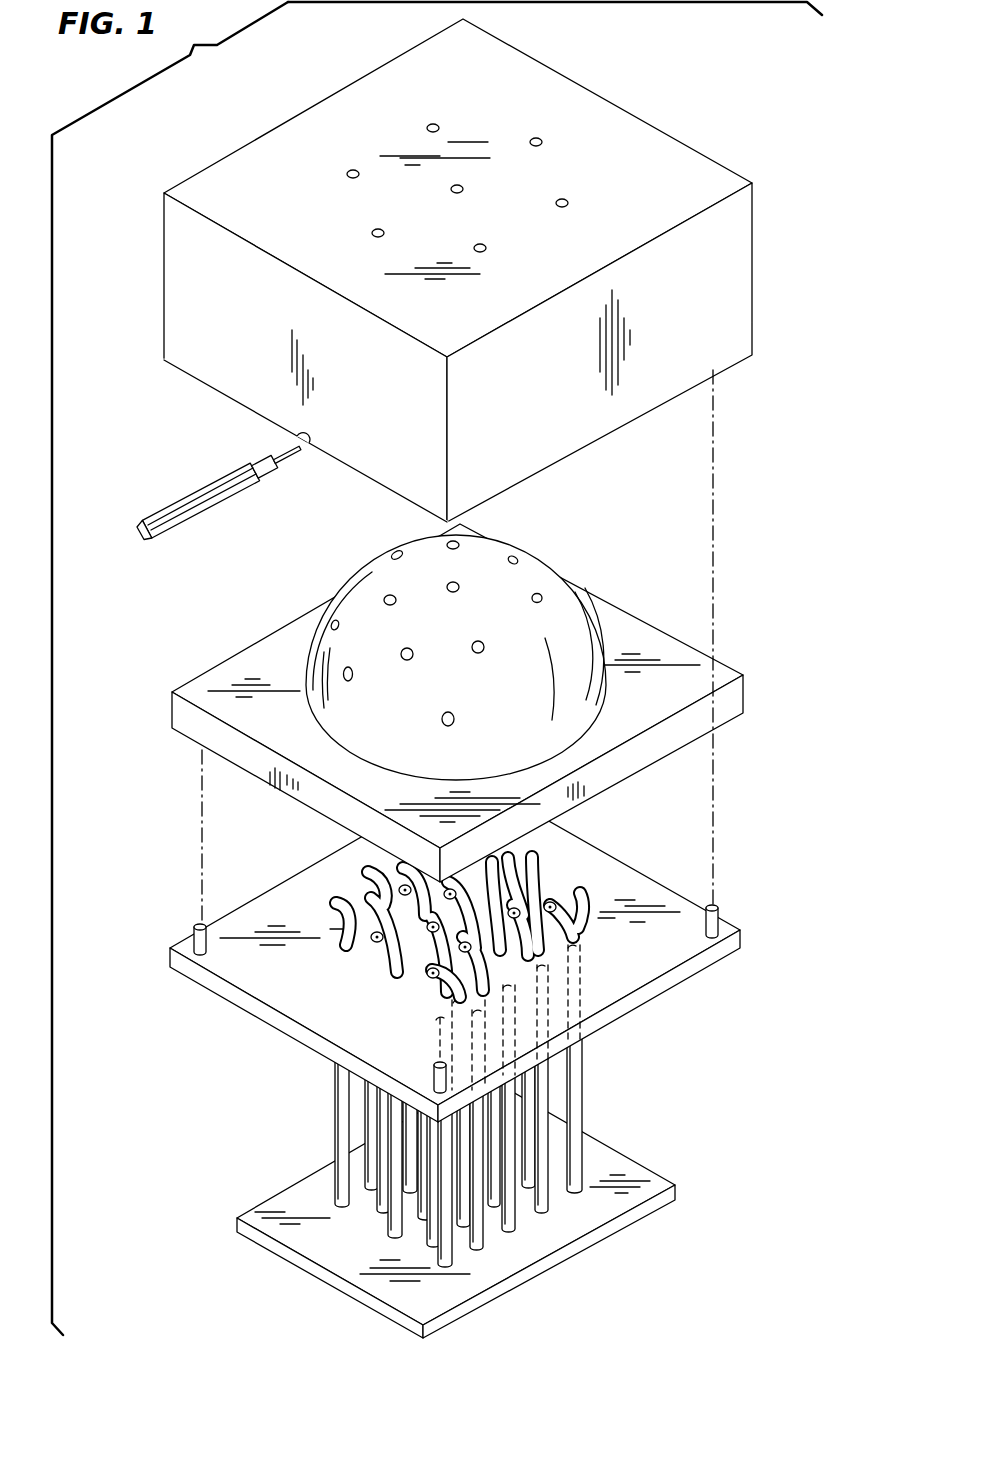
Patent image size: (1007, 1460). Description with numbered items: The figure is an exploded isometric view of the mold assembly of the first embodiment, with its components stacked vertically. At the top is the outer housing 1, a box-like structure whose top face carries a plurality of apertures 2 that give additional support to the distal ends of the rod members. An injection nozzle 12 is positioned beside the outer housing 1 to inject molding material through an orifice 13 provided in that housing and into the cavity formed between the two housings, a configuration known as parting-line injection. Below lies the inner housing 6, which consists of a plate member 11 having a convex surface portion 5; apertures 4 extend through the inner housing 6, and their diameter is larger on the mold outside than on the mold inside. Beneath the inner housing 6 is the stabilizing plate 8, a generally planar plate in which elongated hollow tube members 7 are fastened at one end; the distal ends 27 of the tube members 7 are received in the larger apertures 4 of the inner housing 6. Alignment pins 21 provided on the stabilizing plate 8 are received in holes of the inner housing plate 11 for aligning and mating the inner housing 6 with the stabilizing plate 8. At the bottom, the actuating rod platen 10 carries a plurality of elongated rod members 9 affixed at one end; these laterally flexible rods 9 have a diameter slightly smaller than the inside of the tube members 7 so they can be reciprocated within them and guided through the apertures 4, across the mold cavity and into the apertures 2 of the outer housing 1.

The outer housing 1 is at (458, 270).
The apertures 2 is at (536, 140).
The apertures 4 is at (453, 584).
The convex surface portion 5 is at (568, 610).
The inner housing 6 is at (466, 648).
The elongated hollow tube members 7 is at (543, 930).
The stabilizing plate 8 is at (725, 952).
The elongated rod members 9 is at (575, 1097).
The actuating rod platen 10 is at (657, 1185).
The plate member 11 is at (745, 695).
The injection nozzle 12 is at (265, 470).
The orifice 13 is at (303, 437).
The alignment pins 21 is at (718, 918).
The distal ends 27 is at (372, 950).